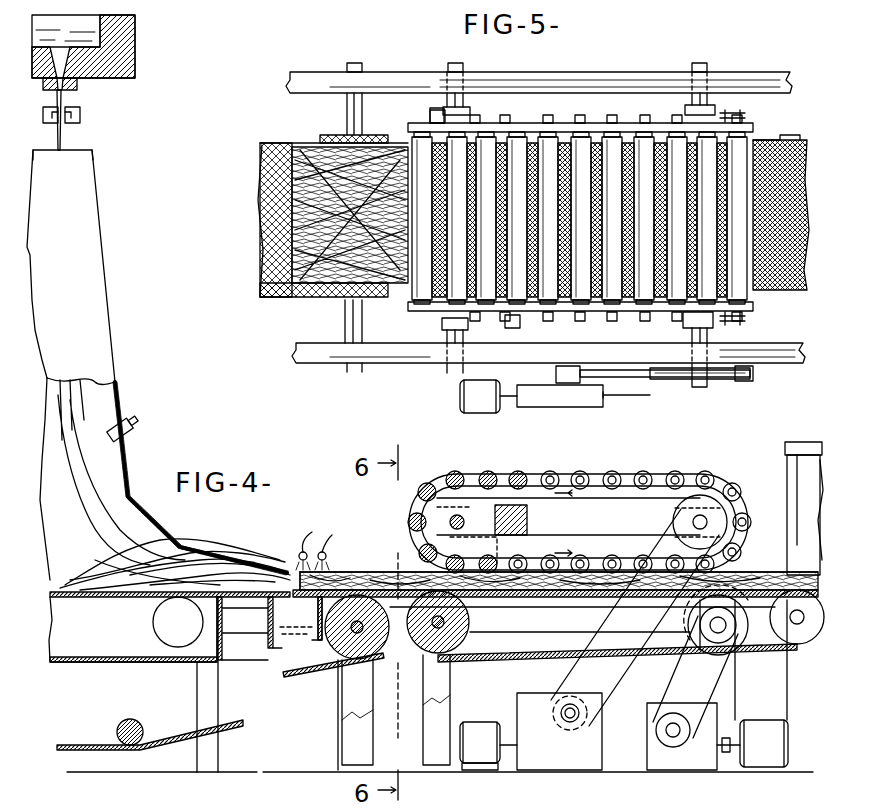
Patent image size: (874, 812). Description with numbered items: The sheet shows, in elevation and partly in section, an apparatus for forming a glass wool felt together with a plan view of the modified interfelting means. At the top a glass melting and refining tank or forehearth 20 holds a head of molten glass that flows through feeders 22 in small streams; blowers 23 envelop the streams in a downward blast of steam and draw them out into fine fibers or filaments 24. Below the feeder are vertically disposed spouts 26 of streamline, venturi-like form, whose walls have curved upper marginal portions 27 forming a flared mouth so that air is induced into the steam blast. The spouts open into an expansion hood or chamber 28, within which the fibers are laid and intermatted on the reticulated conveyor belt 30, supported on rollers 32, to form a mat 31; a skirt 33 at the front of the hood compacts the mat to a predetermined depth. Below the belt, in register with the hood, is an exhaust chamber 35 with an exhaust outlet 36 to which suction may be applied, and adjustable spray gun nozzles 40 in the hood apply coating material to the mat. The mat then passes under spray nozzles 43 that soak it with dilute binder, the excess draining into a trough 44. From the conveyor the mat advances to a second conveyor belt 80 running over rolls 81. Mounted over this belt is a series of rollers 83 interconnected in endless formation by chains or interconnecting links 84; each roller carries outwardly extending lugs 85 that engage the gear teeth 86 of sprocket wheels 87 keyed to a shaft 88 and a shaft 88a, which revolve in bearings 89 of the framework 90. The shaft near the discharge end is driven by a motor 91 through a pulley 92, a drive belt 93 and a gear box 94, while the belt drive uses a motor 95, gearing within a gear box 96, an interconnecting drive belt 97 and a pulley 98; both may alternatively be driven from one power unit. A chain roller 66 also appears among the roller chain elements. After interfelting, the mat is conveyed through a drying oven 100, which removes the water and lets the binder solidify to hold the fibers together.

In FIG. 4, the glass melting and refining tank or forehearth 20 is at (118, 23).
In FIG. 4, the feeders 22 is at (78, 86).
In FIG. 4, the blowers 23 is at (81, 115).
In FIG. 4, the fibers or filaments 24 is at (66, 140).
In FIG. 4, the spouts 26 is at (88, 217).
In FIG. 4, the upper marginal portions 27 is at (90, 153).
In FIG. 4, the expansion hood or chamber 28 is at (124, 471).
In FIG. 4, the reticulated conveyor belt 30 is at (130, 597).
In FIG. 5, the reticulated conveyor belt 30 is at (262, 287).
In FIG. 4, the mat 31 is at (286, 570).
In FIG. 5, the mat 31 is at (303, 167).
In FIG. 4, the rollers 32 is at (117, 730).
In FIG. 5, the rollers 32 is at (340, 300).
In FIG. 4, the skirt 33 is at (233, 560).
In FIG. 4, the exhaust chamber 35 is at (70, 656).
In FIG. 4, the exhaust outlet 36 is at (172, 647).
In FIG. 4, the adjustable spray gun nozzles 40 is at (131, 438).
In FIG. 4, the spray nozzles 43 is at (314, 547).
In FIG. 4, the trough 44 is at (300, 645).
In FIG. 4, the chain roller 66 is at (672, 557).
In FIG. 4, the conveyor belt 80 is at (520, 593).
In FIG. 4, the rolls 81 is at (468, 636).
In FIG. 4, the rollers 83 is at (483, 470).
In FIG. 5, the rollers 83 is at (587, 143).
In FIG. 4, the chains or interconnecting links 84 is at (620, 473).
In FIG. 5, the chains or interconnecting links 84 is at (545, 128).
In FIG. 4, the outwardly extending lugs 85 is at (653, 450).
In FIG. 5, the outwardly extending lugs 85 is at (450, 115).
In FIG. 4, the gear teeth 86 is at (495, 500).
In FIG. 4, the sprocket wheels 87 is at (433, 507).
In FIG. 5, the sprocket wheels 87 is at (505, 128).
In FIG. 4, the shaft 88 is at (450, 522).
In FIG. 5, the shaft 88 is at (457, 65).
In FIG. 4, the shaft 88a is at (706, 520).
In FIG. 5, the shaft 88a is at (697, 66).
In FIG. 5, the bearings 89 is at (450, 83).
In FIG. 4, the framework 90 is at (553, 633).
In FIG. 5, the framework 90 is at (762, 80).
In FIG. 4, the motor 91 is at (488, 746).
In FIG. 5, the motor 91 is at (490, 412).
In FIG. 4, the pulley 92 is at (708, 498).
In FIG. 5, the pulley 92 is at (678, 379).
In FIG. 4, the drive belt 93 is at (602, 632).
In FIG. 5, the drive belt 93 is at (628, 378).
In FIG. 4, the gear box 94 is at (559, 731).
In FIG. 5, the gear box 94 is at (583, 407).
In FIG. 4, the motor 95 is at (752, 743).
In FIG. 4, the gear box 96 is at (686, 762).
In FIG. 4, the interconnecting drive belt 97 is at (669, 690).
In FIG. 4, the pulley 98 is at (736, 632).
In FIG. 5, the pulley 98 is at (742, 382).
In FIG. 4, the drying oven 100 is at (805, 447).